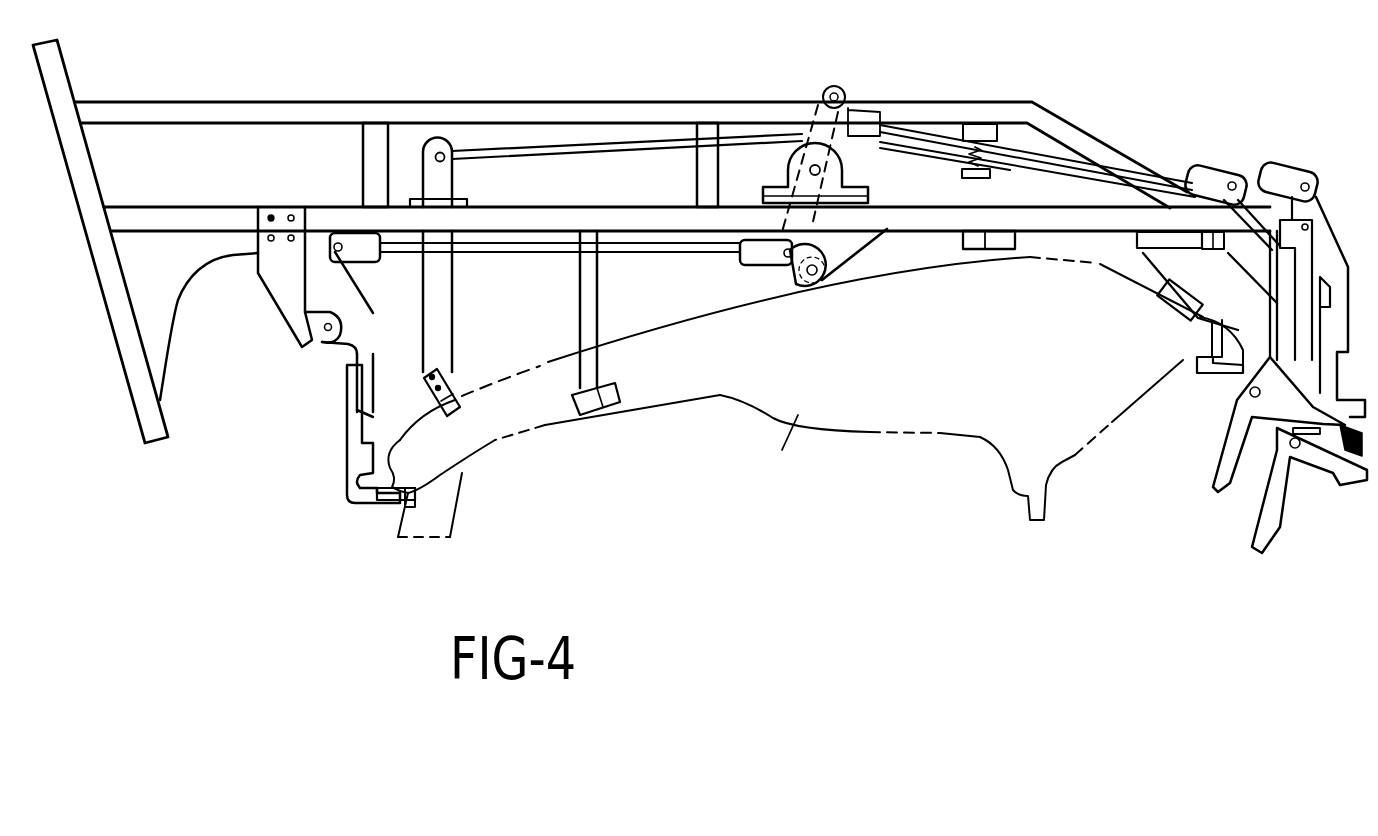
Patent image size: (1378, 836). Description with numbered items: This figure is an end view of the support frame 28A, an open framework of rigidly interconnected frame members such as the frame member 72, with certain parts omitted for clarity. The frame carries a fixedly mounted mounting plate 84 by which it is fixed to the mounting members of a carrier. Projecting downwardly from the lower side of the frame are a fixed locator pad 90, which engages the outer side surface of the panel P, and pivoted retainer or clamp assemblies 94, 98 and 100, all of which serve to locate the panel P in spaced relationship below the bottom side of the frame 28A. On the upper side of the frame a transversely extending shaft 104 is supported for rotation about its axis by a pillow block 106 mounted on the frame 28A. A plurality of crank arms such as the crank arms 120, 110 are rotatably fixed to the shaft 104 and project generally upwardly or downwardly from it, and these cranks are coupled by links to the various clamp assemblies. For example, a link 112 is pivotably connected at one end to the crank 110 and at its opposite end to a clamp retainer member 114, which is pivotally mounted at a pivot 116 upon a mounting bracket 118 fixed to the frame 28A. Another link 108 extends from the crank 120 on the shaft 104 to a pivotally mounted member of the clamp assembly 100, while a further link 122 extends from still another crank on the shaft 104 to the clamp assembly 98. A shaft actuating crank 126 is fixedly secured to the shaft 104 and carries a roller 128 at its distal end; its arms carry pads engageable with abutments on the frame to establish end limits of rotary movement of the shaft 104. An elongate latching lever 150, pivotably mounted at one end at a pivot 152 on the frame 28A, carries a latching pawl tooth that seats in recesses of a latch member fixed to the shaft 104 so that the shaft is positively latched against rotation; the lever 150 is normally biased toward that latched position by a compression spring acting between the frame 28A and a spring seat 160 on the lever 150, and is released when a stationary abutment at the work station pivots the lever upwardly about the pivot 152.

The support frame 28A is at (622, 96).
The frame member 72 is at (592, 178).
The mounting plate 84 is at (85, 160).
The locator pad 90 is at (984, 252).
The clamp assembly 94 is at (324, 468).
The clamp assembly 98 is at (1230, 398).
The clamp assembly 100 is at (1357, 262).
The shaft 104 is at (838, 170).
The pillow block 106 is at (774, 158).
The link 108 is at (1166, 160).
The crank arm 110 is at (835, 282).
The link 112 is at (497, 257).
The clamp retainer member 114 is at (363, 322).
The pivot 116 is at (328, 335).
The mounting bracket 118 is at (282, 292).
The crank arm 120 is at (800, 126).
The link 122 is at (997, 135).
The shaft actuating crank 126 is at (862, 250).
The roller 128 is at (807, 288).
The latching lever 150 is at (508, 150).
The pivot 152 is at (428, 142).
The spring seat 160 is at (982, 181).
The panel P is at (790, 460).